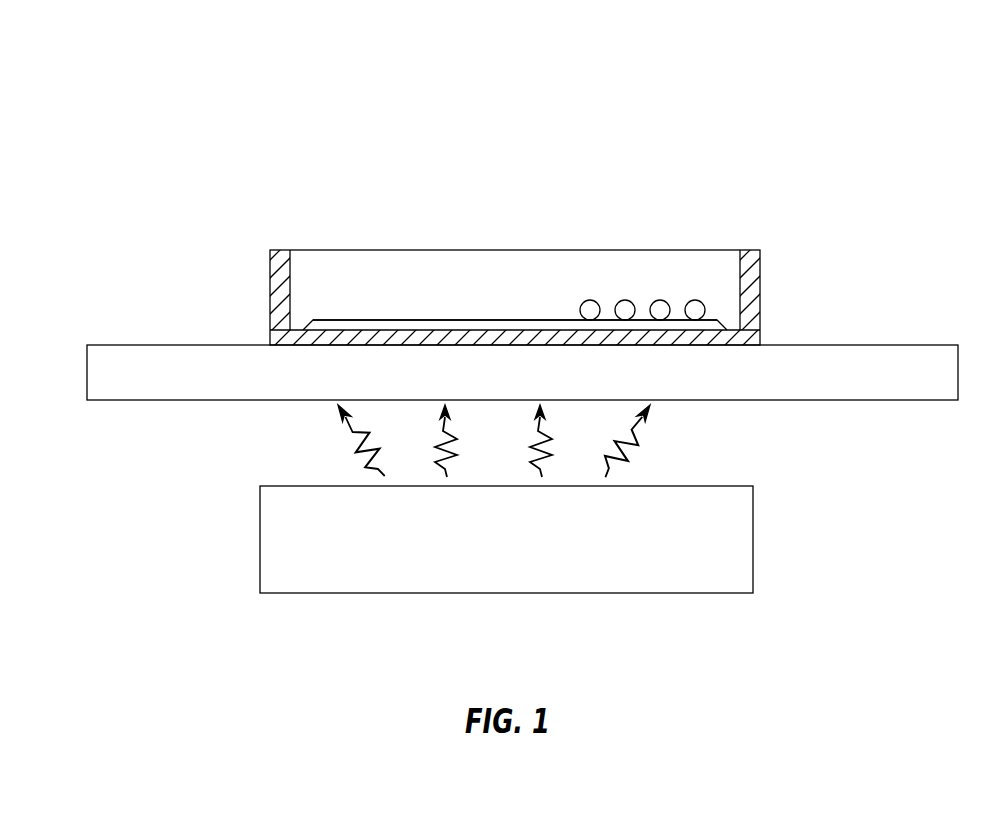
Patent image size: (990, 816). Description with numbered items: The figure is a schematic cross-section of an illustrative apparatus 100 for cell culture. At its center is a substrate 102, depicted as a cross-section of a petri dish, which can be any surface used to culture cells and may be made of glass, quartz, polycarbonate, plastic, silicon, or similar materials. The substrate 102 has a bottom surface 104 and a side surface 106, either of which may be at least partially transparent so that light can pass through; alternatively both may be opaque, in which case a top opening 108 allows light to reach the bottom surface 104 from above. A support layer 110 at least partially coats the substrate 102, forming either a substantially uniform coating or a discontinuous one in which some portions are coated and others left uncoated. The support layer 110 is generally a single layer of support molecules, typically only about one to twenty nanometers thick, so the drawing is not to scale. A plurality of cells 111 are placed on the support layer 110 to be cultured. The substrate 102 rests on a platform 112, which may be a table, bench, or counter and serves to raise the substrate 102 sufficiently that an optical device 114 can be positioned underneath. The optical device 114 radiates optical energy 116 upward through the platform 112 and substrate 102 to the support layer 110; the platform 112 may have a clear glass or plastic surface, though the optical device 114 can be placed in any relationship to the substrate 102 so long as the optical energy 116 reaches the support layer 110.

The apparatus 100 is at (690, 144).
The substrate 102 is at (270, 278).
The bottom surface 104 is at (303, 330).
The side surface 106 is at (276, 296).
The top opening 108 is at (390, 268).
The support layer 110 is at (484, 318).
The cells 111 is at (695, 300).
The platform 112 is at (892, 387).
The optical device 114 is at (522, 549).
The optical energy 116 is at (640, 437).